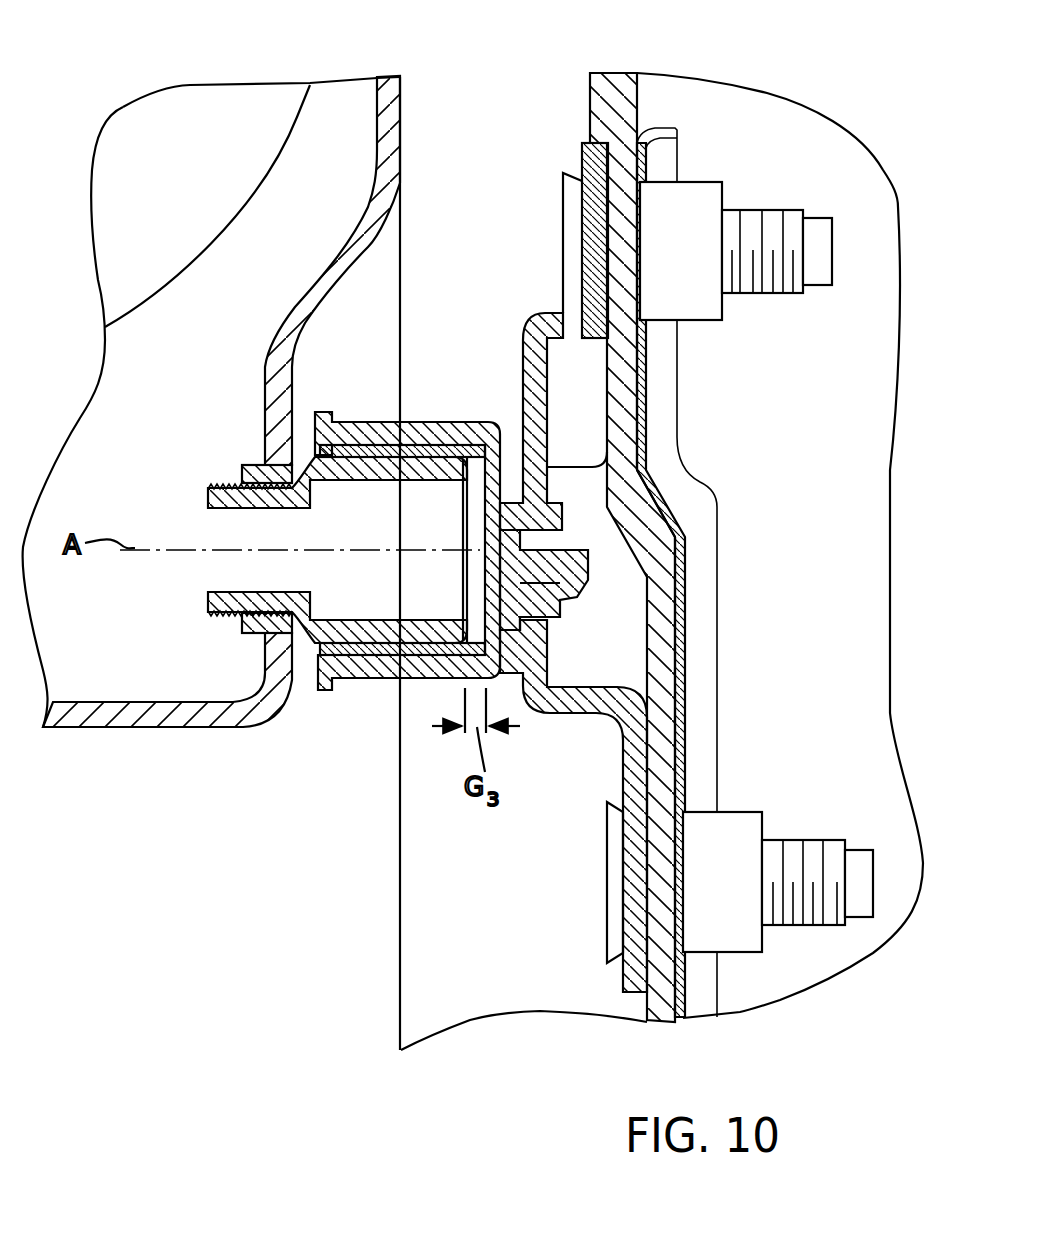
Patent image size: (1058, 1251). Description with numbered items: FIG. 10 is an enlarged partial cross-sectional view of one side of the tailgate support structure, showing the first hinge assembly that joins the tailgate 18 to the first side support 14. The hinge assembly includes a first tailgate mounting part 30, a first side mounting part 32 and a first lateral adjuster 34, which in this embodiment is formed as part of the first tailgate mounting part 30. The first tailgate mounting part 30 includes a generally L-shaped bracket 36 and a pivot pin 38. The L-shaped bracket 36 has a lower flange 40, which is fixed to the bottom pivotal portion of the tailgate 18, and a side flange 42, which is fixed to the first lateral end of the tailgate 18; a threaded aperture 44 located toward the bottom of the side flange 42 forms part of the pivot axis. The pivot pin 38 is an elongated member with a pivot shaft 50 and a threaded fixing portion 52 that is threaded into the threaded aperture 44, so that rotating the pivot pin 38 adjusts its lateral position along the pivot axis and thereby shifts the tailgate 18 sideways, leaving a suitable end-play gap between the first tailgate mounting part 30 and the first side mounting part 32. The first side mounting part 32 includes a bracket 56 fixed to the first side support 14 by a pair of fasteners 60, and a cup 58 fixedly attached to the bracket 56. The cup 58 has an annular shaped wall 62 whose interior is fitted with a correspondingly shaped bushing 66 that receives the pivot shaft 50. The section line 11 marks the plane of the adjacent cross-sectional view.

The section line 11- 11 is at (440, 230).
The first side support 14 is at (613, 102).
The tailgate 18 is at (142, 168).
The first tailgate mounting part 30 is at (281, 492).
The first side mounting part 32 is at (537, 567).
The first lateral adjuster 34 is at (283, 610).
The L-shaped bracket 36 is at (258, 445).
The pivot pin 38 is at (155, 463).
The lower flange 40 is at (102, 712).
The side flange 42 is at (385, 187).
The threaded aperture 44 is at (243, 595).
The pivot shaft 50 is at (345, 630).
The threaded fixing portion 52 is at (226, 631).
The bracket 56 is at (518, 358).
The cup 58 is at (444, 419).
The fasteners 60 is at (768, 290).
The annular shaped wall 62 is at (477, 433).
The bushing 66 is at (359, 420).